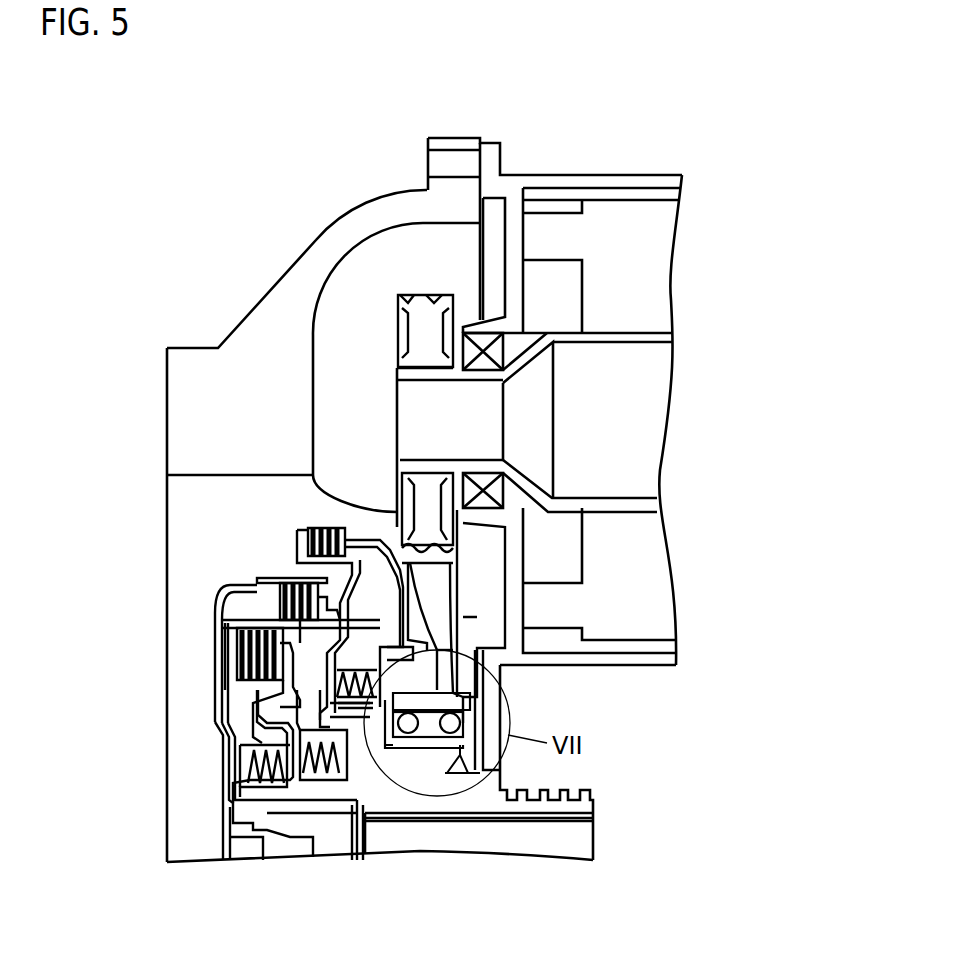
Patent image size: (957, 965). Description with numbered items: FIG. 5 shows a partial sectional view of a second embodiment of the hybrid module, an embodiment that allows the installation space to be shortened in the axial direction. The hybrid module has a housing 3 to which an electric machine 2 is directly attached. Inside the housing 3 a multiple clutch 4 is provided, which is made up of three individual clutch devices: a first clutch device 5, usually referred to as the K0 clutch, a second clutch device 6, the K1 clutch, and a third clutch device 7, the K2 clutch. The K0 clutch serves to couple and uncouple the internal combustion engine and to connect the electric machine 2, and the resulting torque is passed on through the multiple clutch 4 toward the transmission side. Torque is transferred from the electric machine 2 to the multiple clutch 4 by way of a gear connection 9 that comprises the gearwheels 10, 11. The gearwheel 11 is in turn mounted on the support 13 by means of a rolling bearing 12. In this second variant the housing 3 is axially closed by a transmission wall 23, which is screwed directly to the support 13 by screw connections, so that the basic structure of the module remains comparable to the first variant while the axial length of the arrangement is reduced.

The electric machine 2 is at (734, 180).
The housing 3 is at (245, 360).
The multiple clutch 4 is at (211, 788).
The first clutch device 5 is at (307, 522).
The second clutch device 6 is at (257, 567).
The third clutch device 7 is at (223, 612).
The gear connection 9 is at (385, 329).
The gearwheel 10 is at (427, 313).
The gearwheel 11 is at (440, 615).
The rolling bearing 12 is at (430, 735).
The support 13 is at (460, 755).
The transmission wall 23 is at (488, 717).